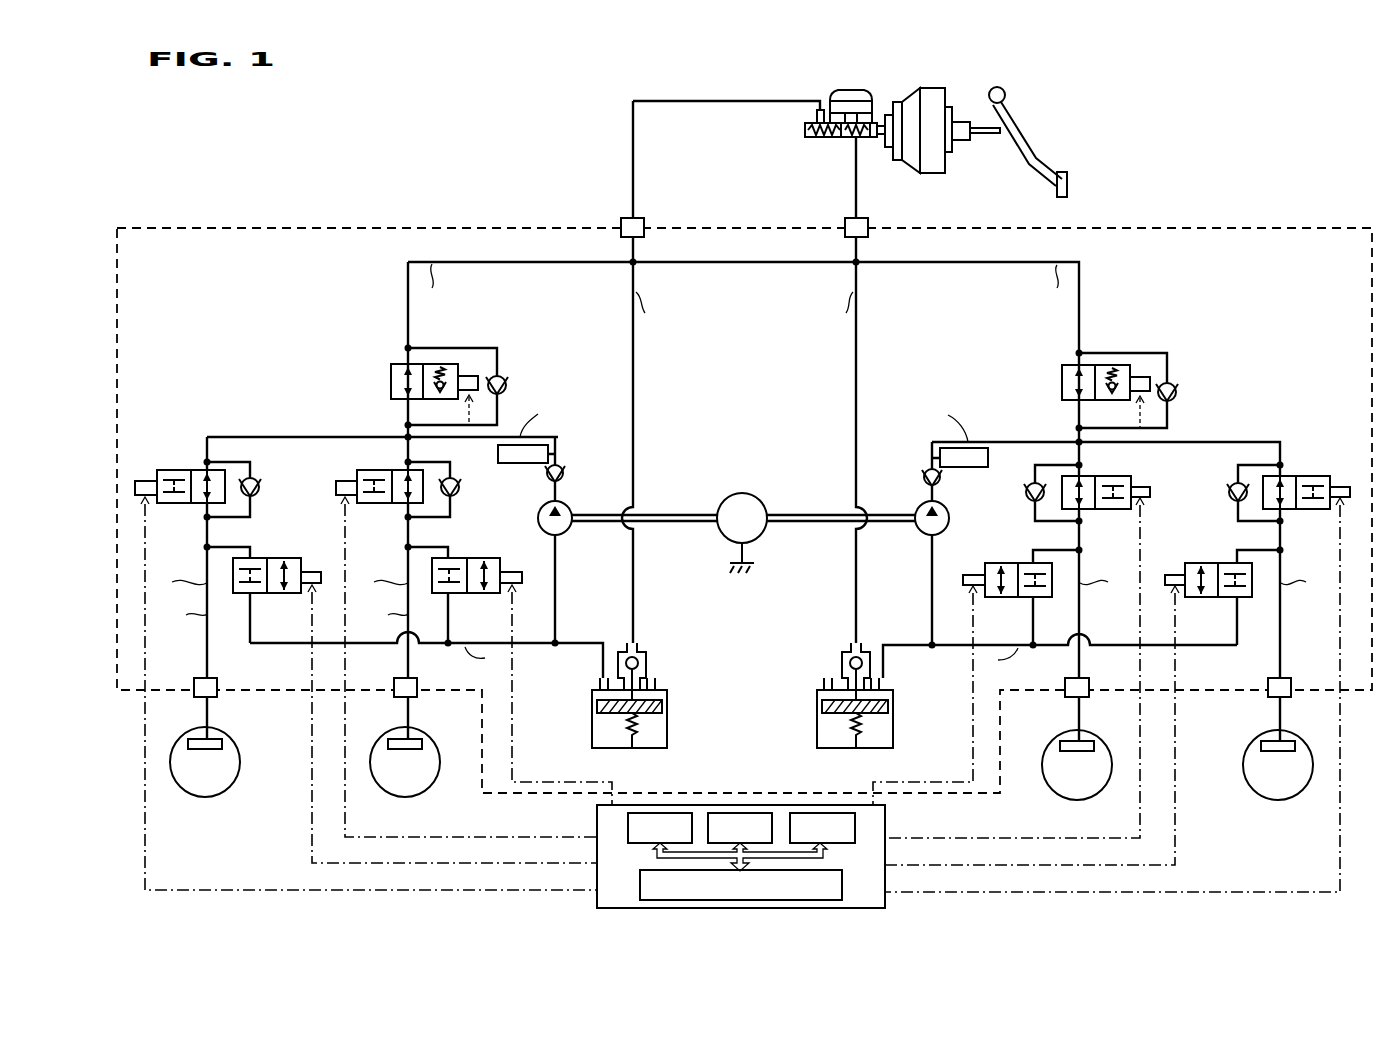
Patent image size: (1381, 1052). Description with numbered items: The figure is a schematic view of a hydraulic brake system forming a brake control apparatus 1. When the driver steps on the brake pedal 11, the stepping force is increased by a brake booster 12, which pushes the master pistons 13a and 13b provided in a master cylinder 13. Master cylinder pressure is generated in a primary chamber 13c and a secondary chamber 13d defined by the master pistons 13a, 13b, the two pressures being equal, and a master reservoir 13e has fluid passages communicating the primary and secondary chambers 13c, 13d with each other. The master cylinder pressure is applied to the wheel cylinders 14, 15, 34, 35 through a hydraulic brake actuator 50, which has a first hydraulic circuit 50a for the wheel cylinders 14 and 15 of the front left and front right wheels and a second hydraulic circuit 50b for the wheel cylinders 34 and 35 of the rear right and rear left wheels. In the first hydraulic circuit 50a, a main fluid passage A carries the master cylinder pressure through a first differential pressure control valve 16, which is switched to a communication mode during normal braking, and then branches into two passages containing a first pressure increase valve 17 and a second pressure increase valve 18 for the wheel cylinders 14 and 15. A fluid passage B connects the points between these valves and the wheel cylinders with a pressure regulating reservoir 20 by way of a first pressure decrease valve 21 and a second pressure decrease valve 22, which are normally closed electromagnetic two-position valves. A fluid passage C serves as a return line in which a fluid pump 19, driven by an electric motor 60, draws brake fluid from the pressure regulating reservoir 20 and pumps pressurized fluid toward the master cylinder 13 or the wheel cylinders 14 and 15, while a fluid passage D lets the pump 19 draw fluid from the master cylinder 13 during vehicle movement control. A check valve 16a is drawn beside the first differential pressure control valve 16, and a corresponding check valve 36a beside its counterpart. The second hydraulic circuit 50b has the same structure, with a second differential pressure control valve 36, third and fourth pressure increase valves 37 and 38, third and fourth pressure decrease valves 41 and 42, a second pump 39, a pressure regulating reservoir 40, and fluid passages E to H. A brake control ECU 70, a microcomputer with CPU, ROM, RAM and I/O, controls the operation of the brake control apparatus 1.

The brake control apparatus 1 is at (1147, 128).
The brake pedal 11 is at (1015, 122).
The brake booster 12 is at (940, 88).
The master cylinder 13 is at (792, 134).
The master piston 13a is at (842, 138).
The master piston 13b is at (873, 138).
The primary chamber 13c is at (812, 138).
The secondary chamber 13d is at (865, 138).
The master reservoir 13e is at (852, 89).
The wheel cylinder 14 is at (188, 742).
The wheel cylinder 15 is at (388, 742).
The first differential pressure control valve 16 is at (391, 381).
The check valve 16a is at (503, 378).
The first pressure increase valve 17 is at (204, 460).
The second pressure increase valve 18 is at (392, 464).
The fluid pump 19 is at (540, 517).
The pressure regulating reservoir 20 is at (587, 751).
The first pressure decrease valve 21 is at (258, 556).
The second pressure decrease valve 22 is at (455, 557).
The wheel cylinder 34 is at (1296, 746).
The wheel cylinder 35 is at (1094, 746).
The second differential pressure control valve 36 is at (1062, 385).
The check valve 36a is at (1175, 387).
The third pressure increase valve 37 is at (1297, 476).
The fourth pressure increase valve 38 is at (1096, 476).
The pump 39 is at (948, 517).
The pressure regulating reservoir 40 is at (898, 751).
The third pressure decrease valve 41 is at (1232, 562).
The fourth pressure decrease valve 42 is at (1022, 562).
The hydraulic brake actuator 50 is at (1357, 227).
The first hydraulic circuit 50a is at (199, 270).
The second hydraulic circuit 50b is at (1304, 276).
The electric motor 60 is at (738, 492).
The brake control ECU 70 is at (886, 816).